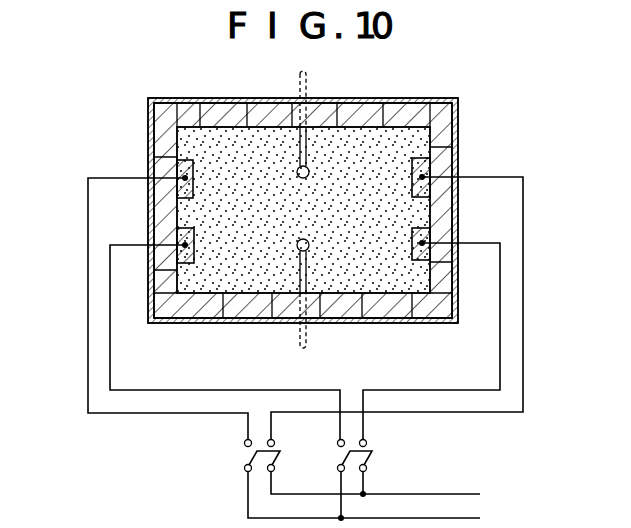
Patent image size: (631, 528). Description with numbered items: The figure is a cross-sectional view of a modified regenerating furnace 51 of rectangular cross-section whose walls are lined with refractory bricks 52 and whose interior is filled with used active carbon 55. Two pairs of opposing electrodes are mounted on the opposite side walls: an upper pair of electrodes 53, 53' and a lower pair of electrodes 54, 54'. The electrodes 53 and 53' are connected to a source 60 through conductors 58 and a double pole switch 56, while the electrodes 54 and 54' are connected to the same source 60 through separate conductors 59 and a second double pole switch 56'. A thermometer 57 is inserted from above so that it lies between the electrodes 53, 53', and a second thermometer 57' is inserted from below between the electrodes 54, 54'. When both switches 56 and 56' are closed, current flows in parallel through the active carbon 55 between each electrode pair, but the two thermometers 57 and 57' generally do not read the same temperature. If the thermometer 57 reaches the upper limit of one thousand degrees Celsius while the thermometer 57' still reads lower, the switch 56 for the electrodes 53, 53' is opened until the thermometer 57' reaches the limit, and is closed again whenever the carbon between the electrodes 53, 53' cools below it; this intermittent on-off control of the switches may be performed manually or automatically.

The regenerating furnace 51 is at (458, 103).
The refractory bricks 52 is at (358, 110).
The electrode 53 is at (146, 169).
The electrode 53' is at (457, 165).
The electrode 54 is at (147, 234).
The electrode 54' is at (457, 231).
The used active carbon 55 is at (259, 280).
The double pole switch 56 is at (232, 456).
The double pole switch 56' is at (379, 455).
The thermometer 57 is at (270, 116).
The thermometer 57' is at (328, 305).
The conductors 58 is at (87, 200).
The conductors 59 is at (110, 357).
The source 60 is at (487, 492).